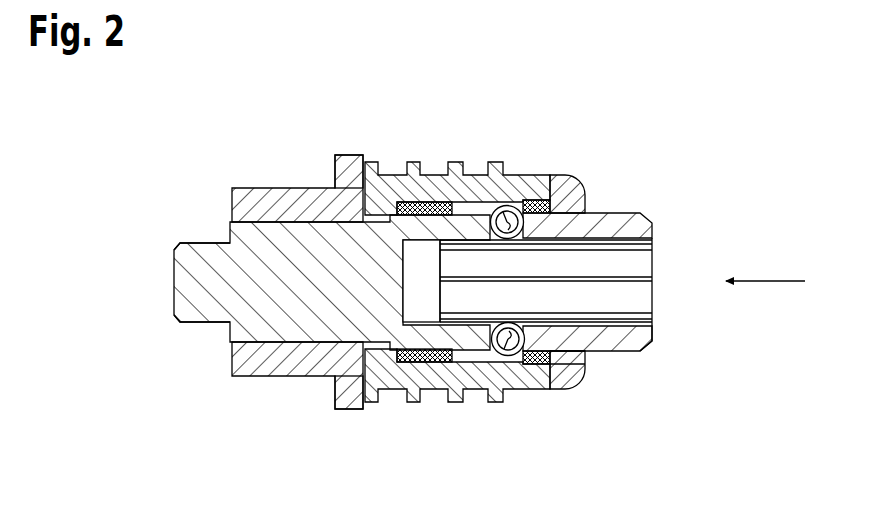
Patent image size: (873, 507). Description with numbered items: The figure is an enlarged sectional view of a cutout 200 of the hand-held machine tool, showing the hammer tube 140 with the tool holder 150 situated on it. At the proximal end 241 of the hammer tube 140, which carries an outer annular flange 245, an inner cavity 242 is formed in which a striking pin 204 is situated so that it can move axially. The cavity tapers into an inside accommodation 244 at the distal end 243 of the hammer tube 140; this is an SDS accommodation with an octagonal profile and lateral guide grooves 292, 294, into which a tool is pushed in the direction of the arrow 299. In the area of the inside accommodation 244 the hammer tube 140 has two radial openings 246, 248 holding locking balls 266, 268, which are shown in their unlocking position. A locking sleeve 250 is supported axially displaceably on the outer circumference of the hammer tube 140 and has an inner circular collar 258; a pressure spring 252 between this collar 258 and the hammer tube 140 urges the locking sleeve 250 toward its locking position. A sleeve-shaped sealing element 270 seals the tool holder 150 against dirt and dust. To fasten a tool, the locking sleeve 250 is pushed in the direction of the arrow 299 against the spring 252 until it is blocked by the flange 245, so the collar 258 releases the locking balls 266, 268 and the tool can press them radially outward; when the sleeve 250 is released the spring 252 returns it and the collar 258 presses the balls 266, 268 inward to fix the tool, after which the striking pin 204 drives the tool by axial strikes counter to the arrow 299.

The cutout 200 is at (307, 268).
The hammer tube 140 is at (263, 198).
The outer annular flange 245 is at (353, 160).
The proximal end 241 is at (248, 374).
The inner cavity 242 is at (298, 323).
The striking pin 204 is at (192, 310).
The inner circular collar 258 is at (468, 219).
The tool holder 150 is at (592, 264).
The locking sleeve 250 is at (450, 396).
The pressure spring 252 is at (426, 203).
The radial opening 248 is at (532, 313).
The radial opening 246 is at (530, 252).
The sleeve-shaped sealing element 270 is at (573, 386).
The inside accommodation 244 is at (646, 288).
The lateral guide groove 292 is at (656, 247).
The lateral guide groove 294 is at (656, 315).
The distal end 243 is at (623, 358).
The locking ball 266 is at (503, 217).
The locking ball 268 is at (508, 346).
The arrow 299 is at (778, 281).